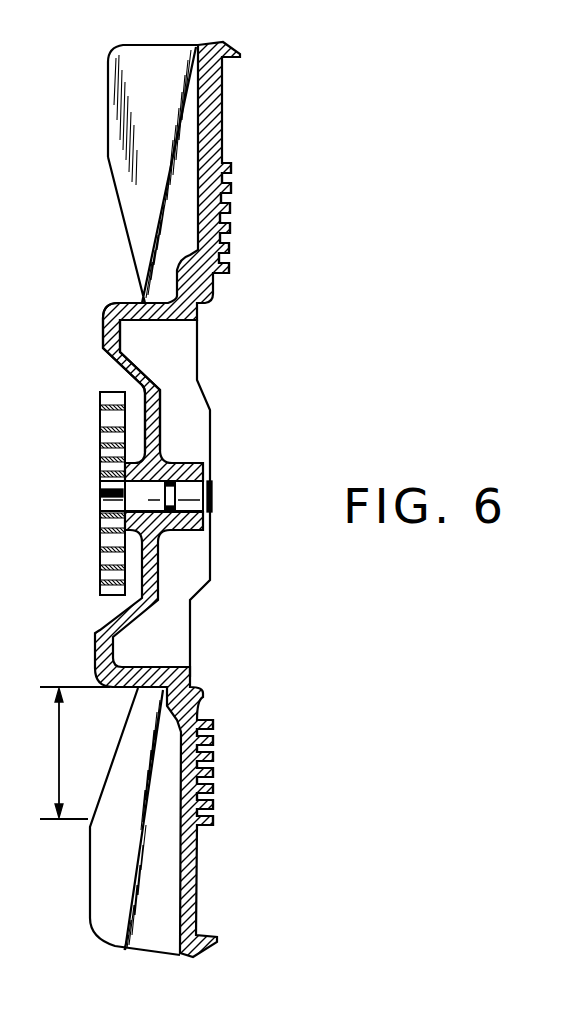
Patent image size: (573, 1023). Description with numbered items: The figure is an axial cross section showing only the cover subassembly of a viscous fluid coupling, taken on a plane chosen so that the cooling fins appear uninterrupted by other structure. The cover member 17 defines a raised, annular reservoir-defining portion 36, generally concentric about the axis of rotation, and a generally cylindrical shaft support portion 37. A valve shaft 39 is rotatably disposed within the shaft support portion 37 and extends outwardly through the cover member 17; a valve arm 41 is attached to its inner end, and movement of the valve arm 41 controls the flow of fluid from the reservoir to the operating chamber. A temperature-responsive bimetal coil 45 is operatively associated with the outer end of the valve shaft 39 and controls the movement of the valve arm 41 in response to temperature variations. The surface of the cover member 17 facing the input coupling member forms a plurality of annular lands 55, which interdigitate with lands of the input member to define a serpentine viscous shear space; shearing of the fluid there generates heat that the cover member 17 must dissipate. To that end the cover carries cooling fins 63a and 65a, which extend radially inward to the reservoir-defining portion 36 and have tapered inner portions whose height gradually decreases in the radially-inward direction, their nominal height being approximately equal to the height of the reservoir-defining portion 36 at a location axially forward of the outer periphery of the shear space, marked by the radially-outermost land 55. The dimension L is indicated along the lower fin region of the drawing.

The cover member 17 is at (217, 125).
The reservoir-defining portion 36 is at (103, 340).
The shaft support portion 37 is at (188, 522).
The valve shaft 39 is at (100, 498).
The valve arm 41 is at (197, 357).
The bimetal coil 45 is at (100, 452).
The annular lands 55 is at (228, 220).
The cooling fin 63a is at (112, 898).
The cooling fin 65a is at (130, 123).
The length dimension L is at (75, 753).